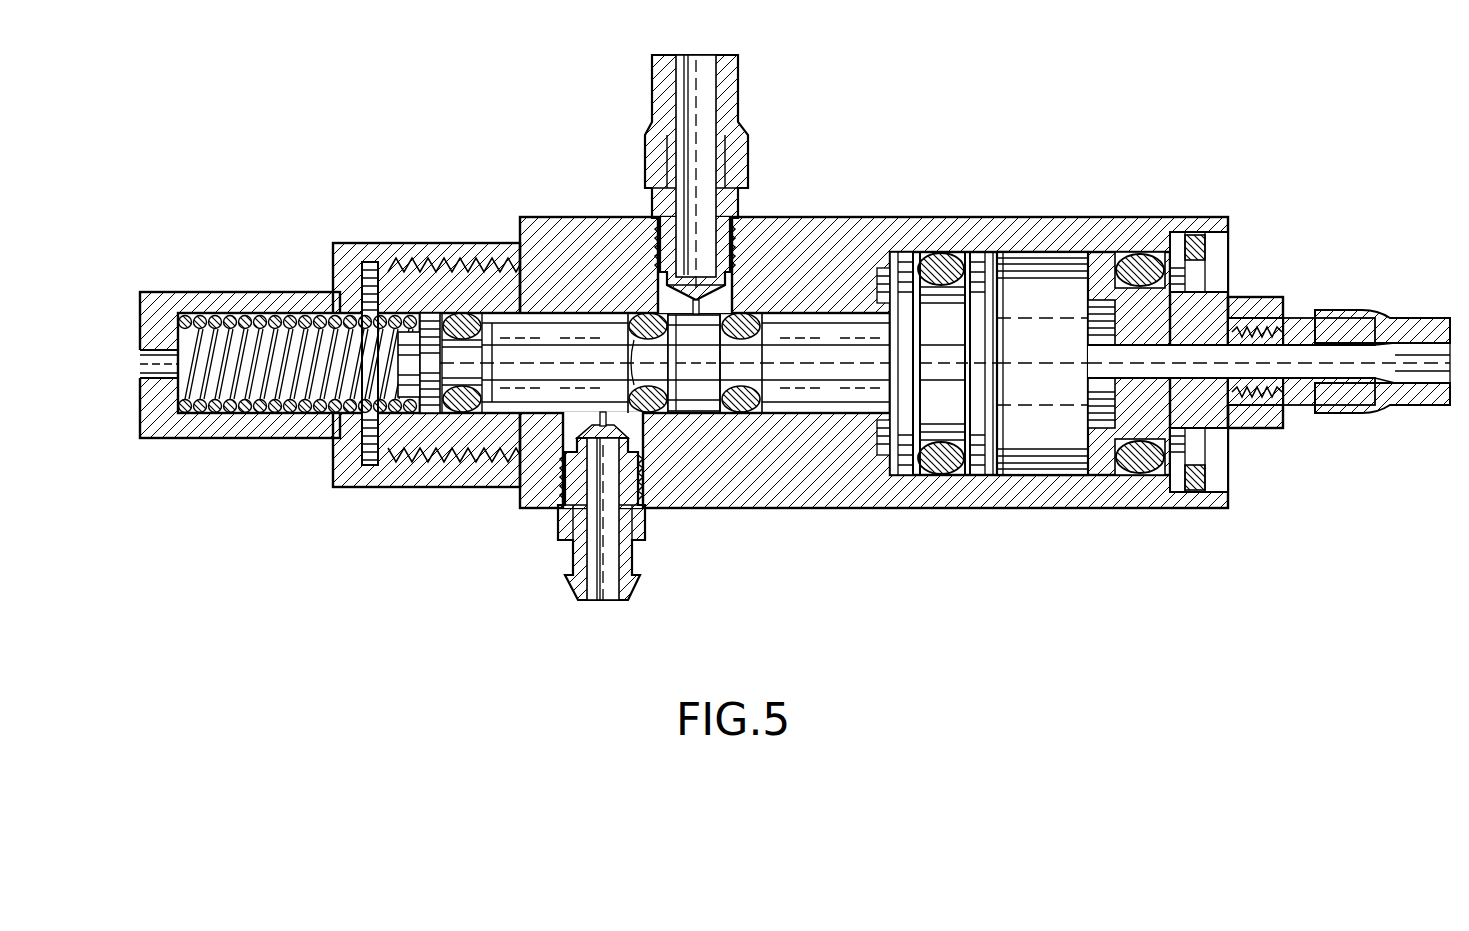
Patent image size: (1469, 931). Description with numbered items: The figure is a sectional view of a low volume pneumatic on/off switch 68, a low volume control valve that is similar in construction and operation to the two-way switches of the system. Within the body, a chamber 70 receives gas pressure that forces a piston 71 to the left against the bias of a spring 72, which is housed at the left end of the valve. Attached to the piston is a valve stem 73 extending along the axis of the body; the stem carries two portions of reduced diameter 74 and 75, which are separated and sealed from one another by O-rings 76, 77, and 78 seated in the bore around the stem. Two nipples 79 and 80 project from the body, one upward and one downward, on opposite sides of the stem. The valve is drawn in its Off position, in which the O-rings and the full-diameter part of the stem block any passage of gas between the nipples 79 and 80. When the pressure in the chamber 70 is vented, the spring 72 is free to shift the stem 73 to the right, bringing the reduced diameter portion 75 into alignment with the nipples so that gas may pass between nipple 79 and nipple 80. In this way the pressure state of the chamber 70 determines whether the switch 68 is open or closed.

The low volume pneumatic on/off switch 68 is at (855, 210).
The chamber 70 is at (1035, 280).
The piston 71 is at (938, 318).
The spring 72 is at (256, 318).
The valve stem 73 is at (822, 418).
The reduced diameter portion 74 is at (672, 316).
The reduced diameter portion 75 is at (525, 388).
The O-ring 76 is at (447, 315).
The O-ring 77 is at (666, 418).
The O-ring 78 is at (747, 316).
The nipple 79 is at (645, 152).
The nipple 80 is at (576, 590).